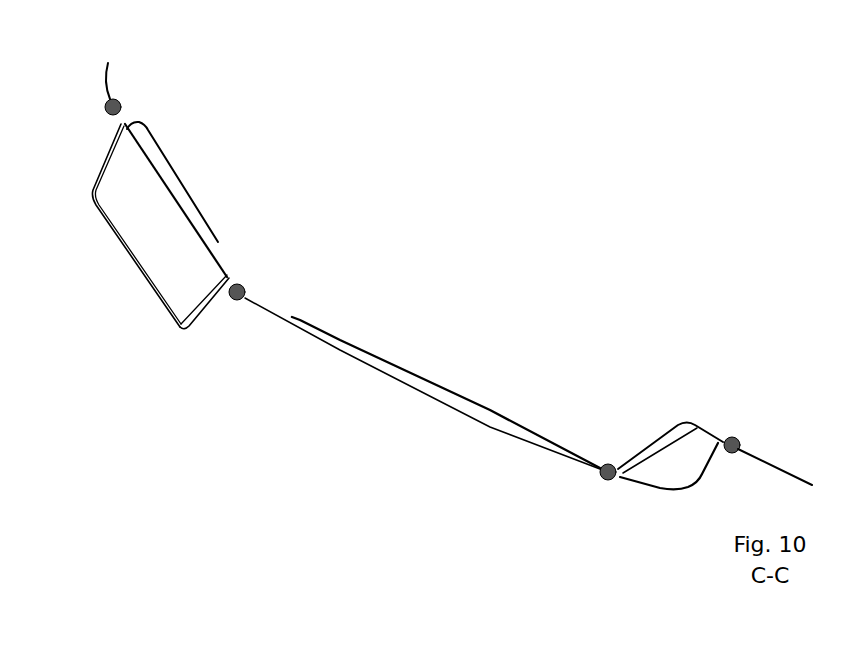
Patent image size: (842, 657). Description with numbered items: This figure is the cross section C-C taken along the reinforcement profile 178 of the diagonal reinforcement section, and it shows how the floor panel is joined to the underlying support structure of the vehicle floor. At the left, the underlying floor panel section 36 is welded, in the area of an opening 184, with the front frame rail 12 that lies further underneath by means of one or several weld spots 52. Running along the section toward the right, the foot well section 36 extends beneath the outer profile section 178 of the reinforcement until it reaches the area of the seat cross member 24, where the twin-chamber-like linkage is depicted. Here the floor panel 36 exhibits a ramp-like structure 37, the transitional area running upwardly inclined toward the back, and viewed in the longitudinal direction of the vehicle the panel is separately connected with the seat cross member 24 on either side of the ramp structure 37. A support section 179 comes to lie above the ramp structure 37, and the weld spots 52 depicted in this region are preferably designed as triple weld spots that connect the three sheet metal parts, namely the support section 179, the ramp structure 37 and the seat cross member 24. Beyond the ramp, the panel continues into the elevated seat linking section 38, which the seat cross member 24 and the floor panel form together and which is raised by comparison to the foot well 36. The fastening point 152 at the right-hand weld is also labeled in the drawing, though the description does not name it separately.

The front frame rail 12 is at (133, 270).
The weld spot 52 is at (121, 105).
The opening 184 is at (267, 280).
The front foot well section 36 is at (495, 427).
The outer profile section 178 is at (463, 397).
The support section 179 is at (672, 427).
The ramp structure 37 is at (682, 438).
The seat cross member 24 is at (657, 490).
The attachment point 152 is at (730, 437).
The seat linking section 38 is at (782, 468).